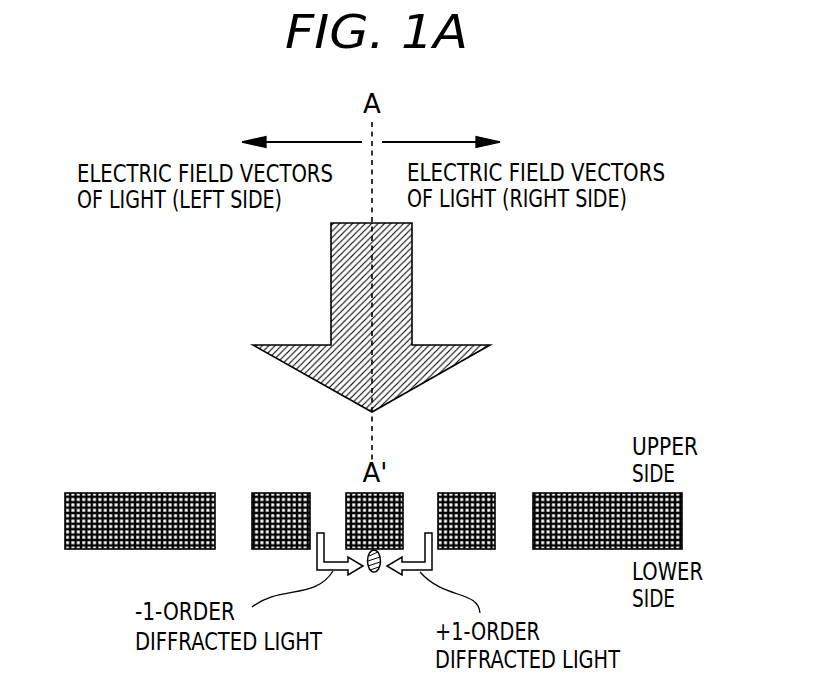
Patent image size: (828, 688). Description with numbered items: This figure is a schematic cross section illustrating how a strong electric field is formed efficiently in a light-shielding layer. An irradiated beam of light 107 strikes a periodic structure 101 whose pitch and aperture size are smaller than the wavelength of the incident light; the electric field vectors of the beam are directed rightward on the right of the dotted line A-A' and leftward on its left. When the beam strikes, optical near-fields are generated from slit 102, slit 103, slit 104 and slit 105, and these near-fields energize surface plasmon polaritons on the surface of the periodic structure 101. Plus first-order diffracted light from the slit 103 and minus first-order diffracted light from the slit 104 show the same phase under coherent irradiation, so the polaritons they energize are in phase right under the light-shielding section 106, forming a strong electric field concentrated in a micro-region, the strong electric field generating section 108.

The periodic structure 101 is at (585, 490).
The slit 102 is at (508, 500).
The slit 103 is at (424, 507).
The slit 104 is at (332, 507).
The slit 105 is at (237, 500).
The light-shielding section 106 is at (387, 497).
The irradiated beam of light 107 is at (330, 276).
The strong electric field generating section 108 is at (373, 573).